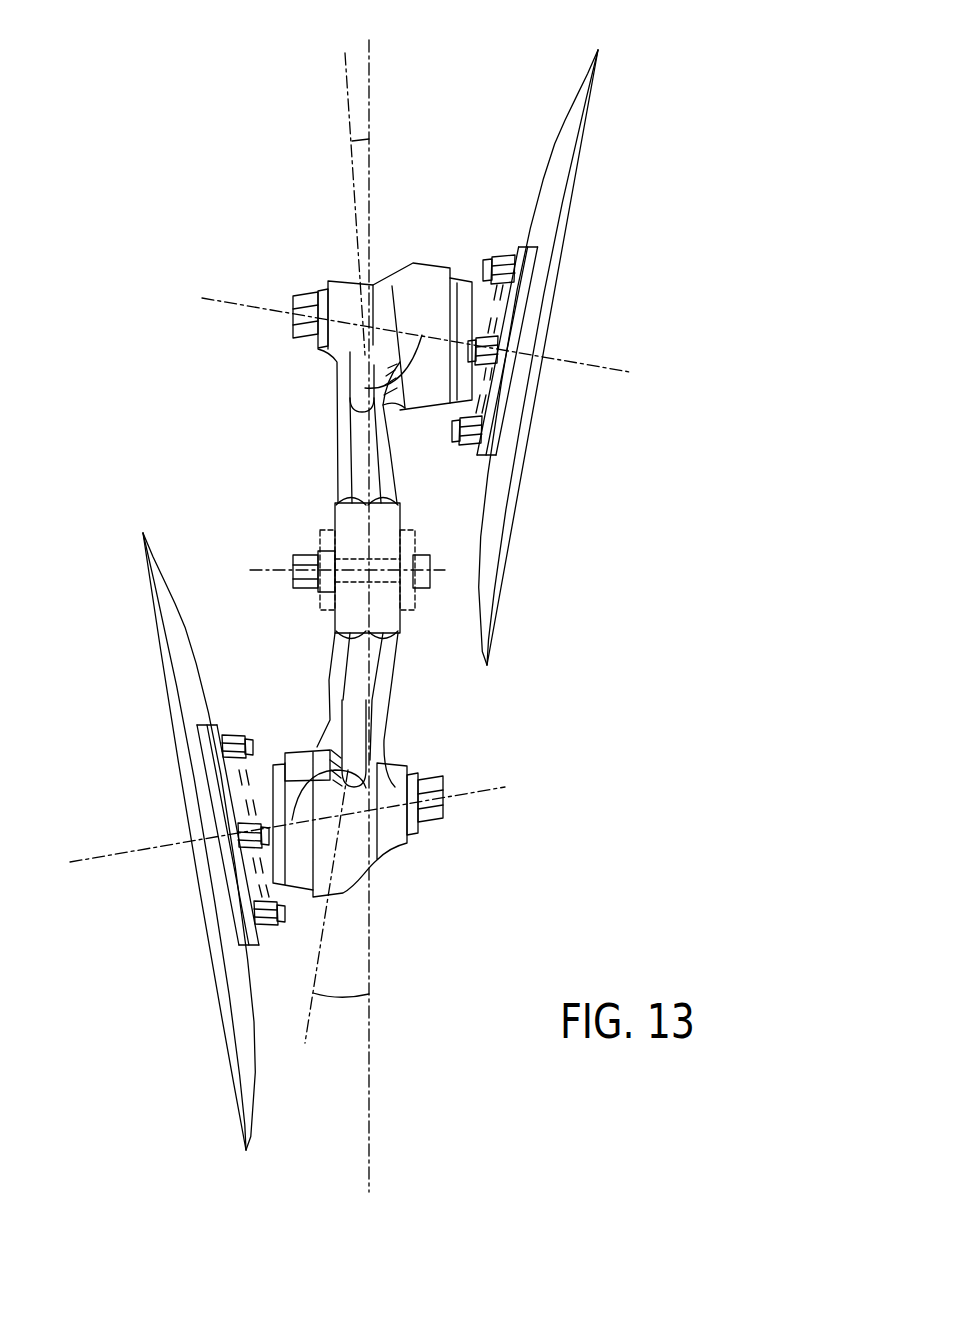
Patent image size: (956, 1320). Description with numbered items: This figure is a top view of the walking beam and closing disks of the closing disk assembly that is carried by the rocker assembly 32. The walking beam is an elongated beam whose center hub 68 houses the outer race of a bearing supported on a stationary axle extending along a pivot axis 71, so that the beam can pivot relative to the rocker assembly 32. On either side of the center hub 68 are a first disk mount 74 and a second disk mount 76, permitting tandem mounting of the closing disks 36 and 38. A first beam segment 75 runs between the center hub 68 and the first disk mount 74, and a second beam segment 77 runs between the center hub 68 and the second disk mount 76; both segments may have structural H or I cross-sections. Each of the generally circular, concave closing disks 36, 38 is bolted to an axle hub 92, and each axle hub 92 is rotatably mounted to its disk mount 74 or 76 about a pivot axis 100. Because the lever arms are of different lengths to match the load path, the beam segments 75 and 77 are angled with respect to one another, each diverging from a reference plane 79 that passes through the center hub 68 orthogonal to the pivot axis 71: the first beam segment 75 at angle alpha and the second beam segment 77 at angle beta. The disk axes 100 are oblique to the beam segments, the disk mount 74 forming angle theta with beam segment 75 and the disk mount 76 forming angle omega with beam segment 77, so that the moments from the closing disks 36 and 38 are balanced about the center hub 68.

The rocker assembly 32 is at (226, 461).
The closing disk 36 is at (237, 995).
The closing disk 38 is at (550, 197).
The center hub 68 is at (350, 535).
The pivot axis 71 is at (262, 570).
The first disk mount 74 is at (387, 840).
The first beam segment 75 is at (343, 678).
The second disk mount 76 is at (377, 290).
The second beam segment 77 is at (345, 455).
The reference plane 79 is at (373, 1158).
The axle hub 92 is at (474, 297).
The pivot axis 100 is at (245, 305).